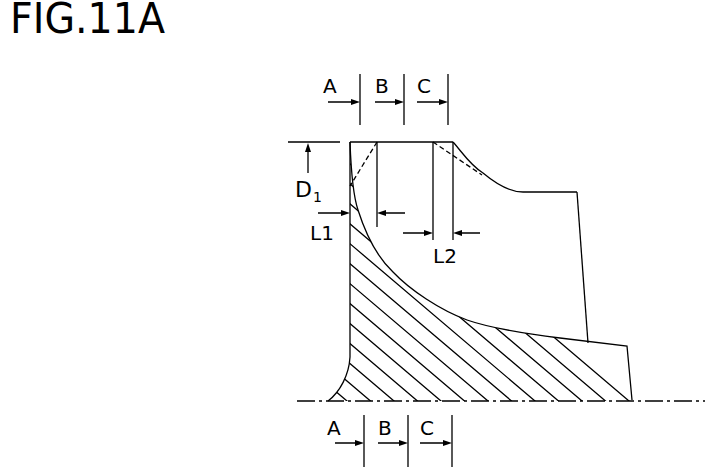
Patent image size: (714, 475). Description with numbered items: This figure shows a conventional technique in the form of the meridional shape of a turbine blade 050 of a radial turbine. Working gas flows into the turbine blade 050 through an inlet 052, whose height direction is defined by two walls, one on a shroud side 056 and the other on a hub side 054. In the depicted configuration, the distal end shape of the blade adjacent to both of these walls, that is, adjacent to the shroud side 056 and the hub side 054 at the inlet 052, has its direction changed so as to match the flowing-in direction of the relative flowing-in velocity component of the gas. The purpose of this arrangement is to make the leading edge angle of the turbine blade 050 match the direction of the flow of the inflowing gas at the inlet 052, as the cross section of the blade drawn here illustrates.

The turbine blade 050 is at (578, 265).
The inlet 052 is at (418, 132).
The hub side 054 is at (350, 163).
The shroud side 056 is at (458, 147).